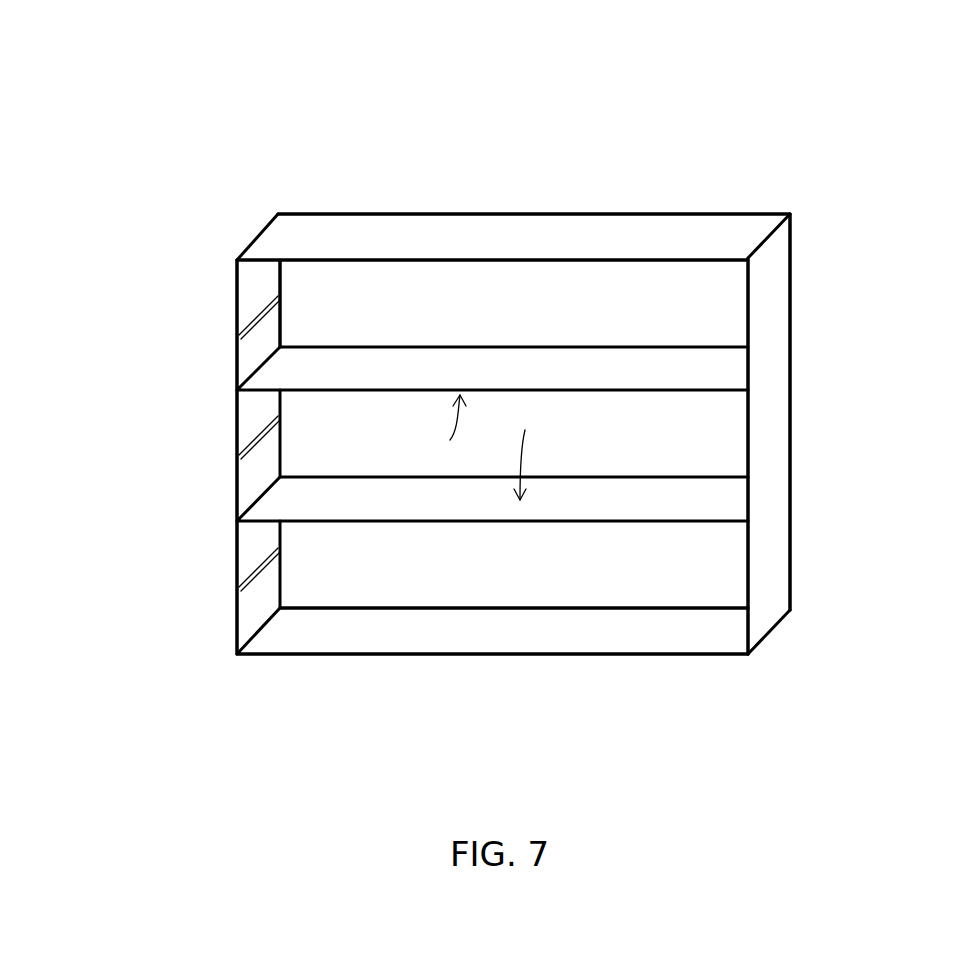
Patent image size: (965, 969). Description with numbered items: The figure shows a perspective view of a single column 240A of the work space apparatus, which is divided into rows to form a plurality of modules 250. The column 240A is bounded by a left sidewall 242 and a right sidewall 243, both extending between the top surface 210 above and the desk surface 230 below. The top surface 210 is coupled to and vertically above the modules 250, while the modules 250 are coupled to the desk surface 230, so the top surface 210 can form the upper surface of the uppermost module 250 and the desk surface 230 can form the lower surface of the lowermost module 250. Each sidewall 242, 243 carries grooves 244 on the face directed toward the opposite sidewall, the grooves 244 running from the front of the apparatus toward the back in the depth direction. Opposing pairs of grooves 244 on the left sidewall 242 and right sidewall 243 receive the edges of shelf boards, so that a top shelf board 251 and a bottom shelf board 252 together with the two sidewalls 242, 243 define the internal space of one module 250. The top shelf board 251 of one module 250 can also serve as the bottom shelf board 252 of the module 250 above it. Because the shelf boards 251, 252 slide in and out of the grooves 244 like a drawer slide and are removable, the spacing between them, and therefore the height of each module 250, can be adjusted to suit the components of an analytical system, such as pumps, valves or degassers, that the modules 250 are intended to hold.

The column 240A is at (488, 108).
The top surface 210 is at (417, 232).
The desk surface 230 is at (610, 655).
The left sidewall 242 is at (237, 424).
The right sidewall 243 is at (780, 497).
The groove 244 is at (277, 298).
The module 250 is at (636, 305).
The top shelf board 251 is at (433, 424).
The bottom shelf board 252 is at (539, 452).